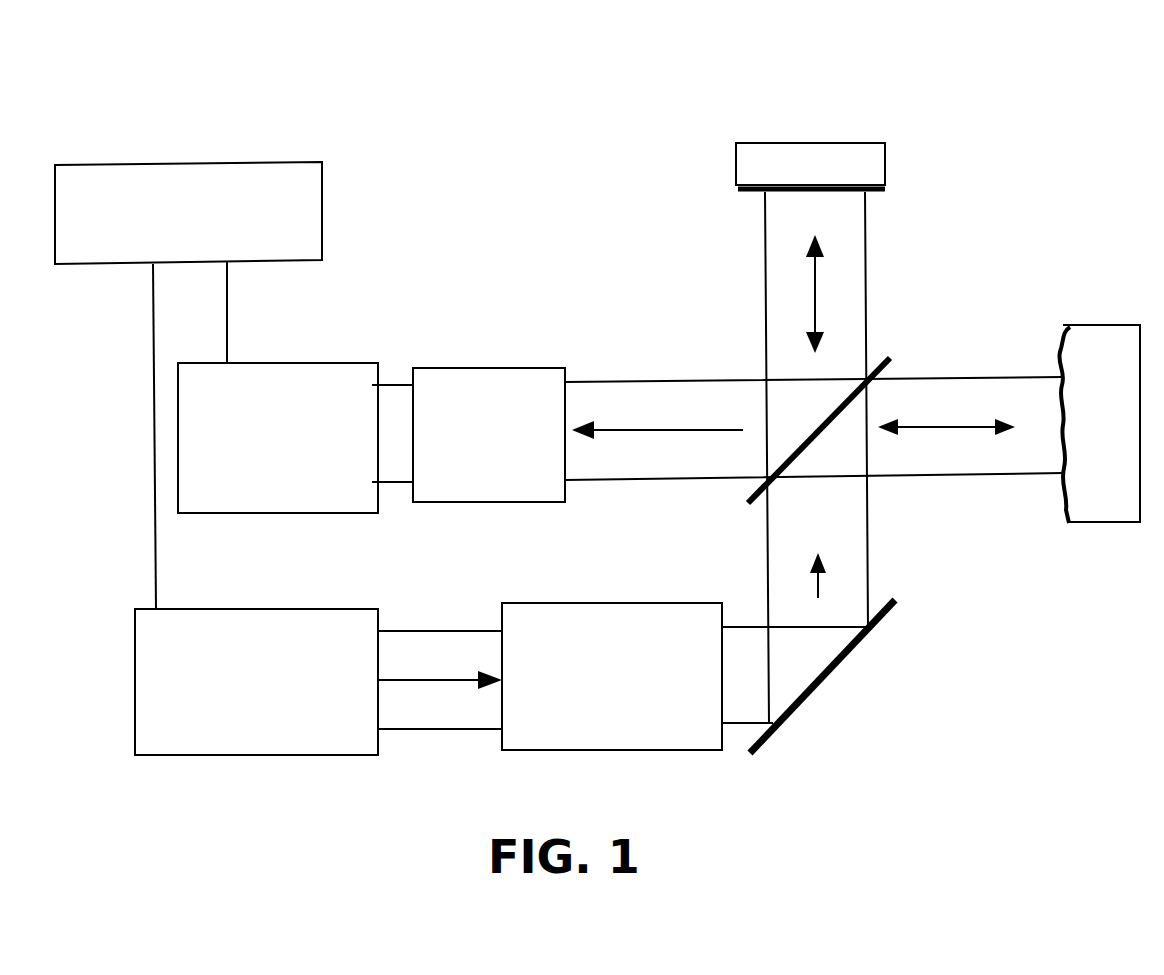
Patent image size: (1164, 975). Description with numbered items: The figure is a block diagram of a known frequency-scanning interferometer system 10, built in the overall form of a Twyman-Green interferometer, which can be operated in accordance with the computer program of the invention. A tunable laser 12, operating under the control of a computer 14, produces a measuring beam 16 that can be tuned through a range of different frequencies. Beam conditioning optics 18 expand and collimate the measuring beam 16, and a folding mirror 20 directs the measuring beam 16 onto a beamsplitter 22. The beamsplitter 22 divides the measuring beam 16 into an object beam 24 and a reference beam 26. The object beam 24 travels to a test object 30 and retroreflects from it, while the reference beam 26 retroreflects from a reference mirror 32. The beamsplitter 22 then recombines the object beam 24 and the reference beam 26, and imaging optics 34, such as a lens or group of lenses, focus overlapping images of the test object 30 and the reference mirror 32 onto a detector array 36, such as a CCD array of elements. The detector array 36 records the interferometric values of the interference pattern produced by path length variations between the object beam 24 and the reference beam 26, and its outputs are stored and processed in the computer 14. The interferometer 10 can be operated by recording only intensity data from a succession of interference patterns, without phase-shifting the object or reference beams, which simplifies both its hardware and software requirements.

The frequency-scanning interferometer system 10 is at (275, 105).
The tunable laser 12 is at (267, 695).
The computer 14 is at (205, 226).
The measuring beam 16 is at (418, 682).
The beam conditioning optics 18 is at (615, 693).
The folding mirror 20 is at (817, 686).
The beamsplitter 22 is at (880, 356).
The object beam 24 is at (962, 430).
The reference beam 26 is at (815, 308).
The test object 30 is at (1058, 360).
The reference mirror 32 is at (848, 191).
The imaging optics 34 is at (502, 447).
The detector array 36 is at (293, 458).